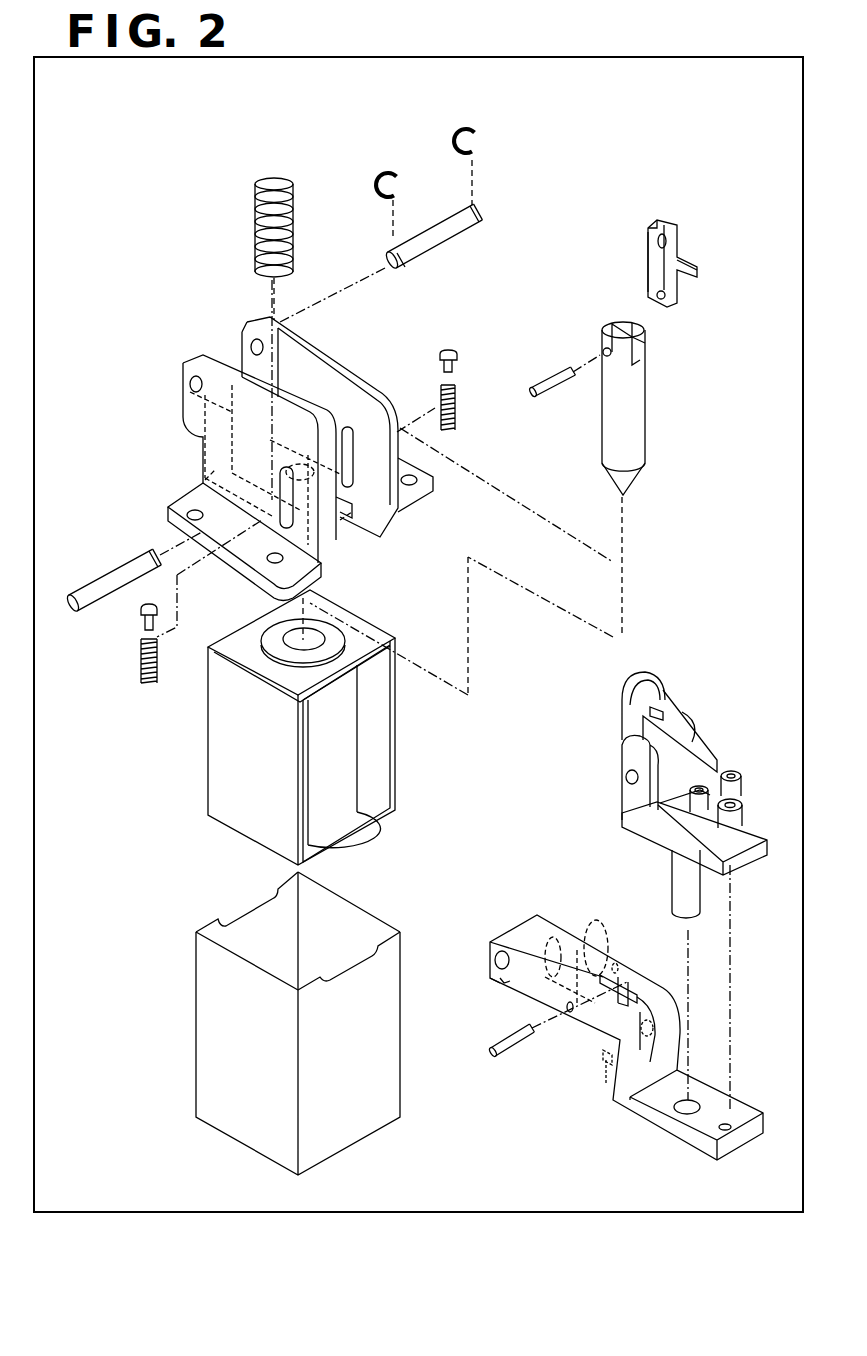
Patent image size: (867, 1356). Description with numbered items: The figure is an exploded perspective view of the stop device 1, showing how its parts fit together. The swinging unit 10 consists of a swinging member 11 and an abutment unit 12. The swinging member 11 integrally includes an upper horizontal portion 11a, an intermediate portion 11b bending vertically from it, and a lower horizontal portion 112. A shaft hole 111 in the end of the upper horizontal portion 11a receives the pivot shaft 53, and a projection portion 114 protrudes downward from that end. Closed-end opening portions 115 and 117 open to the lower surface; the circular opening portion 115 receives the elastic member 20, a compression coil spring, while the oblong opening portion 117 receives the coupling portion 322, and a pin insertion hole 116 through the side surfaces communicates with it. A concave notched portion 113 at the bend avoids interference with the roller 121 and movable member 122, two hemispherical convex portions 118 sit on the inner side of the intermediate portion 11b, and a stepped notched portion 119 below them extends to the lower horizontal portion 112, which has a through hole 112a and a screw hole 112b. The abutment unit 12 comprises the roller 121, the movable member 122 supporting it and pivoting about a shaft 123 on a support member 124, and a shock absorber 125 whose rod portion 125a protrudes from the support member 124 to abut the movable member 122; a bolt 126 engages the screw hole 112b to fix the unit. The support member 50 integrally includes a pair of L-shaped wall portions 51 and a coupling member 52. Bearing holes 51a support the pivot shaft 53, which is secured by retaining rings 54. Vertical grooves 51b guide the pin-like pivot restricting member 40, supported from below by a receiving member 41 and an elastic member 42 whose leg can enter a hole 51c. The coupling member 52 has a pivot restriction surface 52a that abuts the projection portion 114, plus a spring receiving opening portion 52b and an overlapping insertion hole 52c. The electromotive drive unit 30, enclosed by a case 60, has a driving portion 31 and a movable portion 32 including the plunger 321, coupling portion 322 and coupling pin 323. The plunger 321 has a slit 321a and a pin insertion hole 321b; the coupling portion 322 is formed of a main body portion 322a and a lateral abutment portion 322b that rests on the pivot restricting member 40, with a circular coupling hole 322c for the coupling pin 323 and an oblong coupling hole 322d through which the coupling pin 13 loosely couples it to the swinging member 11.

The stop device 1 is at (160, 165).
The swinging unit 10 is at (470, 803).
The swinging member 11 is at (512, 907).
The upper horizontal portion 11a is at (500, 920).
The intermediate portion 11b is at (665, 1060).
The abutment unit 12 is at (578, 808).
The coupling pin 13 is at (515, 1052).
The elastic member 20 is at (272, 178).
The electromotive drive unit 30 is at (269, 737).
The driving portion 31 is at (343, 748).
The movable portion 32 is at (494, 292).
The pivot restricting member 40 is at (96, 560).
The receiving member 41 is at (457, 365).
The elastic member 42 is at (452, 425).
The support member 50 is at (170, 336).
The wall portions 51 is at (271, 445).
The bearing holes 51a is at (252, 328).
The grooves 51b is at (348, 430).
The hole 51c is at (338, 512).
The coupling member 52 is at (283, 452).
The pivot restriction surface 52a is at (247, 372).
The opening portion 52b is at (215, 472).
The insertion hole 52c is at (352, 520).
The pivot shaft 53 is at (450, 220).
The retaining rings 54 is at (386, 172).
The case 60 is at (190, 1116).
The shaft hole 111 is at (494, 958).
The lower horizontal portion 112 is at (677, 1100).
The through hole 112a is at (680, 1115).
The screw hole 112b is at (710, 1150).
The notched portion 113 is at (641, 988).
The projection portion 114 is at (508, 985).
The opening portion 115 is at (562, 920).
The pin insertion hole 116 is at (615, 965).
The opening portion 117 is at (607, 935).
The convex portions 118 is at (565, 1112).
The notched portion 119 is at (608, 1082).
The roller 121 is at (650, 680).
The movable member 122 is at (700, 760).
The shaft 123 is at (626, 777).
The support member 124 is at (660, 832).
The shock absorber 125 is at (685, 877).
The rod portion 125a is at (690, 808).
The bolt 126 is at (740, 800).
The plunger 321 is at (615, 398).
The slit 321a is at (645, 357).
The pin insertion hole 321b is at (614, 360).
The coupling portion 322 is at (629, 265).
The main body portion 322a is at (648, 258).
The abutment portion 322b is at (697, 268).
The coupling hole 322c is at (683, 302).
The coupling hole 322d is at (671, 224).
The coupling pin 323 is at (555, 375).